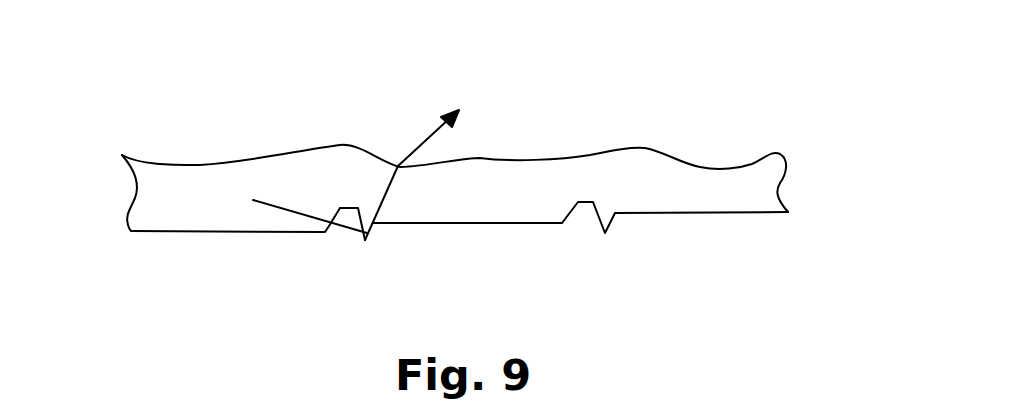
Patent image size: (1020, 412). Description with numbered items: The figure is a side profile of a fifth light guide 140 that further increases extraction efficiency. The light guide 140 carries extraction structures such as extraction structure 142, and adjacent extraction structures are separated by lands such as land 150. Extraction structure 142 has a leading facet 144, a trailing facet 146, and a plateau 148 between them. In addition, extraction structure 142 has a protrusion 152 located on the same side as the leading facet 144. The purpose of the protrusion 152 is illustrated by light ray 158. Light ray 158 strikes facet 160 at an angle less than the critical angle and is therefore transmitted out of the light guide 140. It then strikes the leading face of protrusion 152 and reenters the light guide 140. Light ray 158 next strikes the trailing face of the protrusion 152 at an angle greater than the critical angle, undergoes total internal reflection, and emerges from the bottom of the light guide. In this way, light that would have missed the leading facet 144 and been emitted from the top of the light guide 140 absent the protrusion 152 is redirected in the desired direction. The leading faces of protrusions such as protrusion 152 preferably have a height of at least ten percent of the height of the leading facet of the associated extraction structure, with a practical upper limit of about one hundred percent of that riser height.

The light guide 140 is at (437, 93).
The extraction structure 142 is at (530, 223).
The leading facet 144 is at (364, 207).
The trailing facet 146 is at (572, 217).
The plateau 148 is at (475, 225).
The land 150 is at (350, 207).
The protrusion 152 is at (367, 240).
The light ray 158 is at (281, 203).
The facet 160 is at (327, 236).